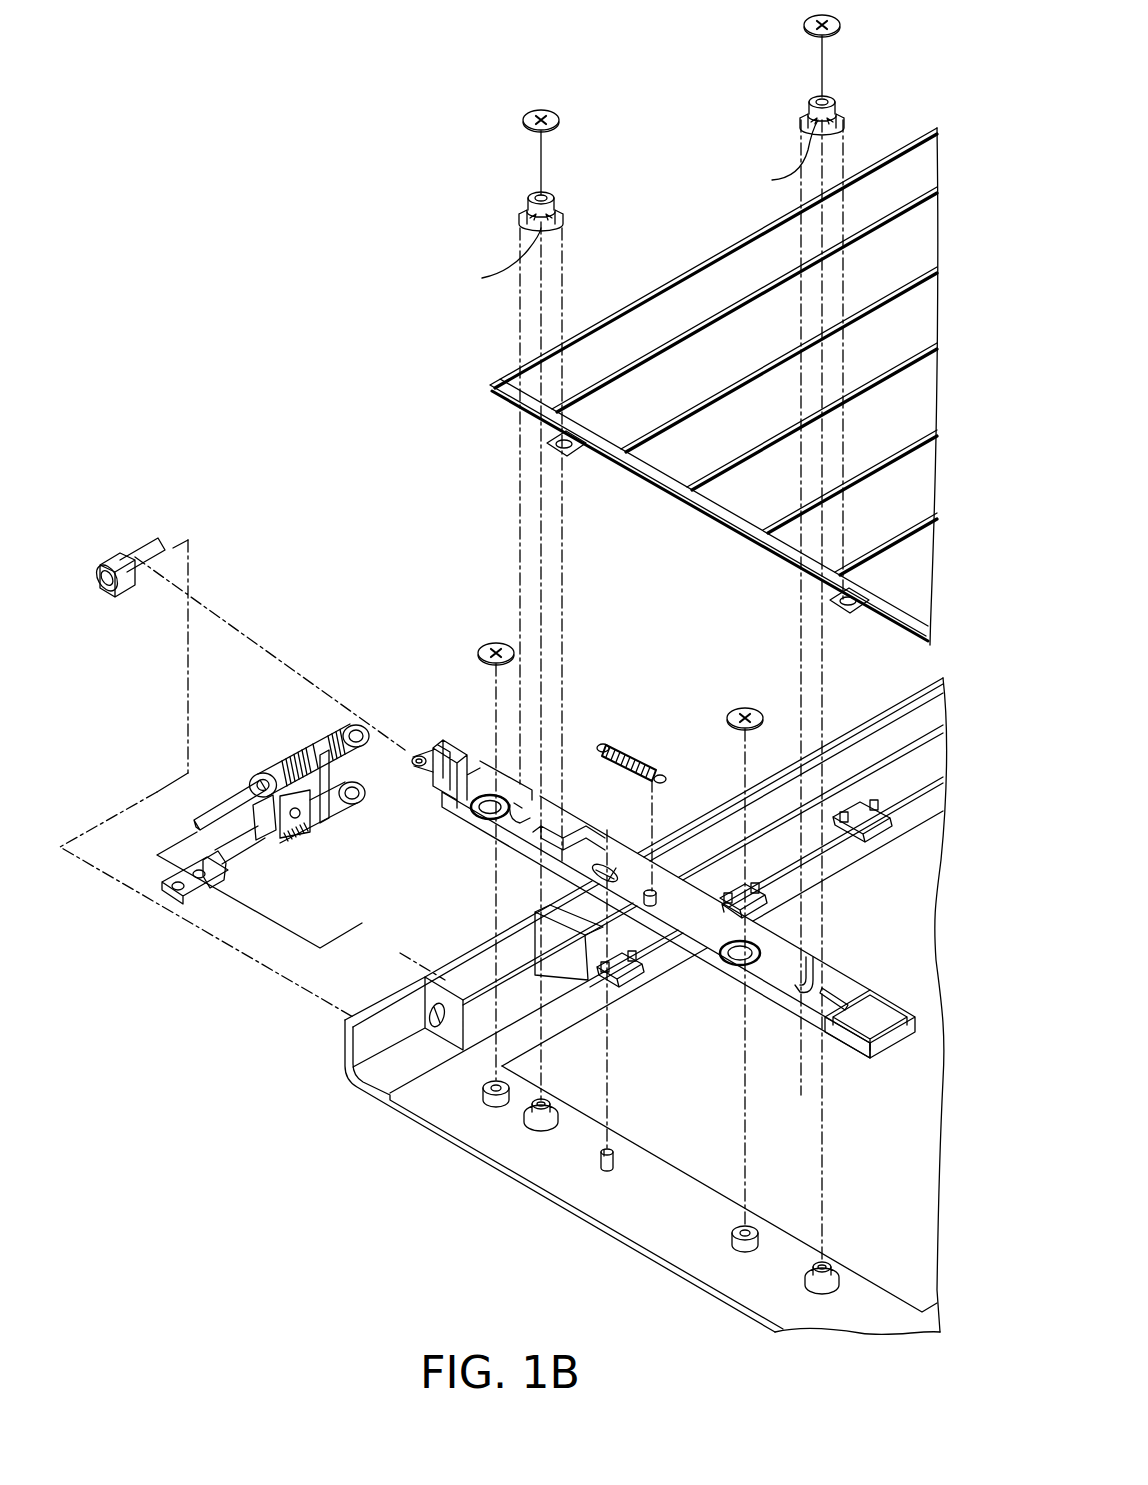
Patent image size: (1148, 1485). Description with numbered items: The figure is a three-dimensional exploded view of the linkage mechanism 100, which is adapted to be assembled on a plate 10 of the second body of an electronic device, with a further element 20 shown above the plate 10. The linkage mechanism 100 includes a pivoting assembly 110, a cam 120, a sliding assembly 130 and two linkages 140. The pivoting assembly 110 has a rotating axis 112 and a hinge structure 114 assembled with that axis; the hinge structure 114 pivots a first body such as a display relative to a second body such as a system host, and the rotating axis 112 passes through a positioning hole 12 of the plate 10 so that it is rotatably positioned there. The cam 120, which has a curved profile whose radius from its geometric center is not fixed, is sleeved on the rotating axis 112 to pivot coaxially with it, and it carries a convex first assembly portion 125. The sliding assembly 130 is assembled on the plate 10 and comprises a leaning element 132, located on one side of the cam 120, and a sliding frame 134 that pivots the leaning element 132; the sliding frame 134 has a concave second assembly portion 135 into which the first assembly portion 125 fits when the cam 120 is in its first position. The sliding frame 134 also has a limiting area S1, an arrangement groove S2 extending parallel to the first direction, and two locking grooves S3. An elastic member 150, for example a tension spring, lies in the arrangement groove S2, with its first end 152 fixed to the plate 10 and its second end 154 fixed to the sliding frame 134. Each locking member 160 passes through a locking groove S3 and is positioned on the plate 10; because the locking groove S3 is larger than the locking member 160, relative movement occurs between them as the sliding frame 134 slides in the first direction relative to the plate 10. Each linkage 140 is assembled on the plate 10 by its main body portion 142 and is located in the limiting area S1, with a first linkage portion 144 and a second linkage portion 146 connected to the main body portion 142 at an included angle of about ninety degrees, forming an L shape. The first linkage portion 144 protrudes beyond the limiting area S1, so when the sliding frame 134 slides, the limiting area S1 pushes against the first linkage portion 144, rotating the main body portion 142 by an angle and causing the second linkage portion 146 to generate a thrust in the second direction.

The plate 10 is at (505, 1150).
The positioning hole 12 is at (435, 1022).
The panel 20 is at (742, 252).
The linkage mechanism 100 is at (497, 536).
The pivoting assembly 110 is at (265, 793).
The rotating axis 112 is at (233, 815).
The hinge structure 114 is at (280, 790).
The cam 120 is at (124, 571).
The first assembly portion 125 is at (122, 595).
The sliding assembly 130 is at (622, 899).
The leaning element 132 is at (452, 818).
The sliding frame 134 is at (484, 818).
The second assembly portion 135 is at (402, 754).
The linkage 140 is at (681, 123).
The main body portion 142 is at (556, 200).
The first linkage portion 144 is at (548, 190).
The second linkage portion 146 is at (566, 215).
The elastic member 150 is at (635, 737).
The first end 152 is at (600, 750).
The second end 154 is at (664, 780).
The locking member 160 is at (485, 640).
The limiting area S1 is at (566, 828).
The arrangement groove S2 is at (597, 866).
The locking groove S3 is at (486, 796).